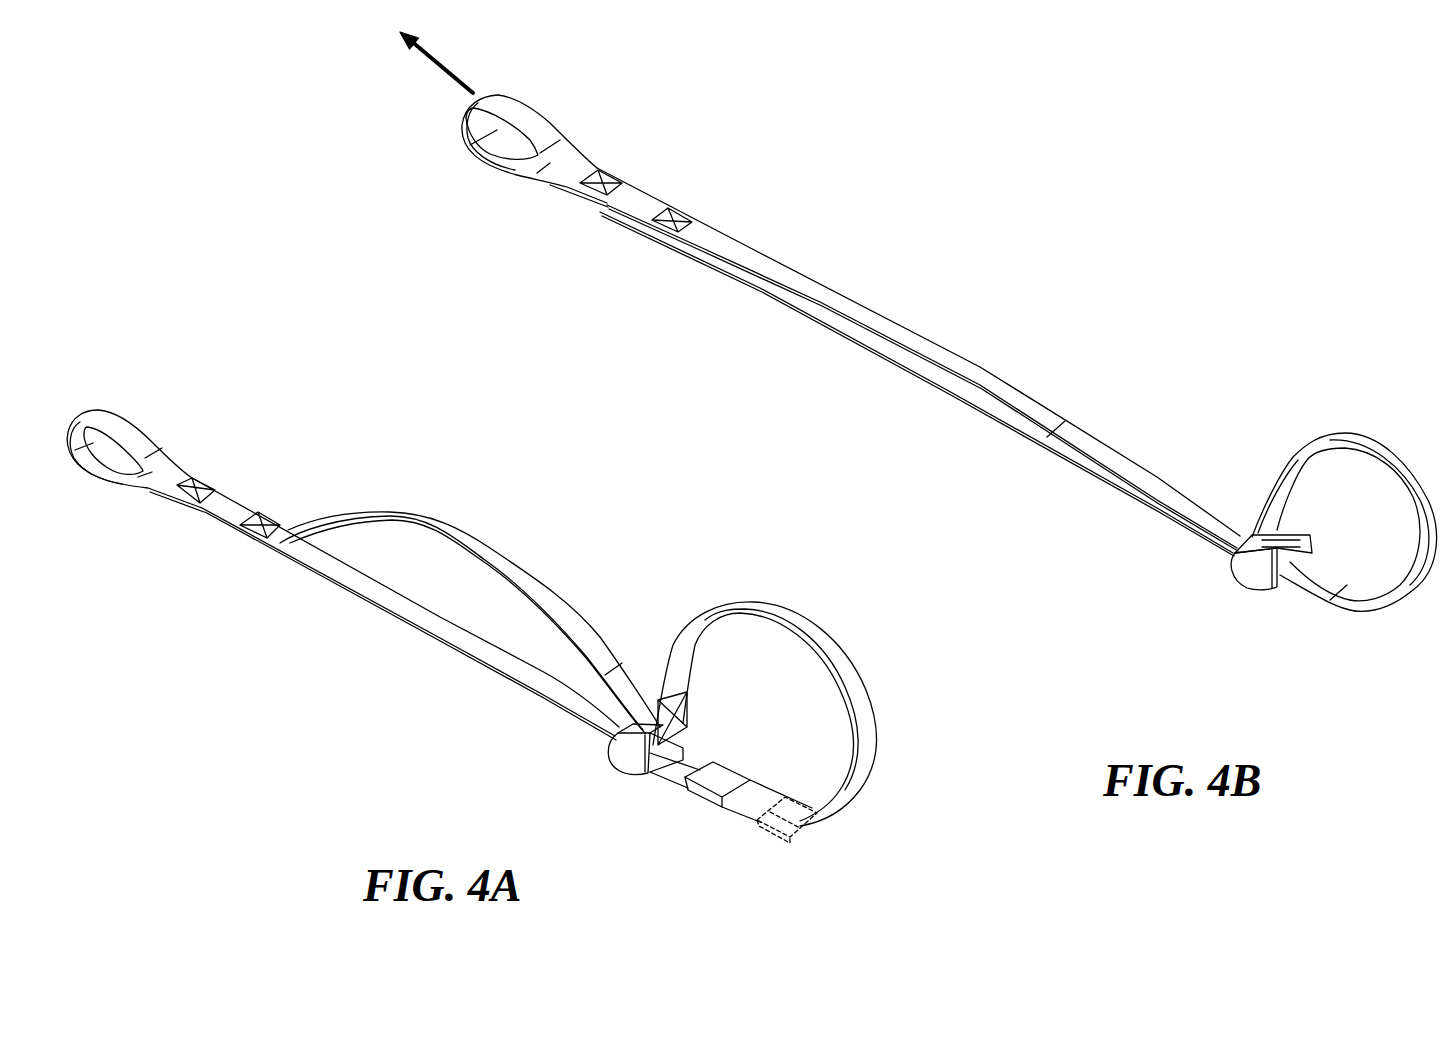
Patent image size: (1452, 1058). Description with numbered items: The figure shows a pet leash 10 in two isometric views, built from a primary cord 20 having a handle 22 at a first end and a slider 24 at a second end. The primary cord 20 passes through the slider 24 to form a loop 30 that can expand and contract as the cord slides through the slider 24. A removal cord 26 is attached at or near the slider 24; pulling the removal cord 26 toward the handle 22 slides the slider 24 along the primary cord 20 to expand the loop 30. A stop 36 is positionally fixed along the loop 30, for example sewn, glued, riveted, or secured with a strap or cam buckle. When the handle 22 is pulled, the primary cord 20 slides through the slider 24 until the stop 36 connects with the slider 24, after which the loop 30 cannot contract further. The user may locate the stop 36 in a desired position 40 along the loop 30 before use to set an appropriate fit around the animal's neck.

In FIG. 4A, the leash 10 is at (238, 364).
In FIG. 4B, the leash 10 is at (1183, 204).
In FIG. 4B, the primary cord 20 is at (943, 393).
In FIG. 4B, the handle 22 is at (462, 126).
In FIG. 4B, the slider 24 is at (1235, 558).
In FIG. 4B, the removal cord 26 is at (942, 345).
In FIG. 4A, the loop 30 is at (767, 600).
In FIG. 4B, the loop 30 is at (1360, 433).
In FIG. 4A, the stop 36 is at (705, 800).
In FIG. 4B, the stop 36 is at (1283, 587).
In FIG. 4A, the desired position 40 is at (783, 840).